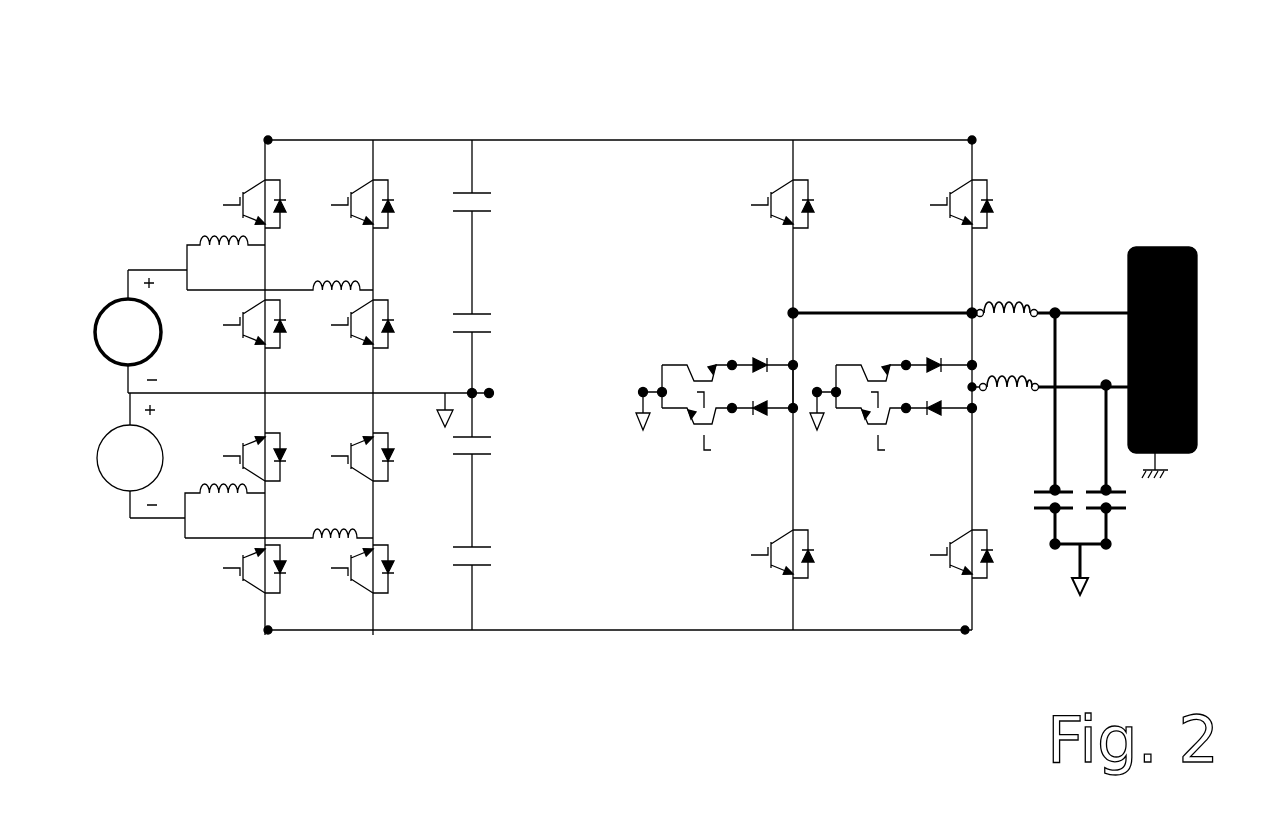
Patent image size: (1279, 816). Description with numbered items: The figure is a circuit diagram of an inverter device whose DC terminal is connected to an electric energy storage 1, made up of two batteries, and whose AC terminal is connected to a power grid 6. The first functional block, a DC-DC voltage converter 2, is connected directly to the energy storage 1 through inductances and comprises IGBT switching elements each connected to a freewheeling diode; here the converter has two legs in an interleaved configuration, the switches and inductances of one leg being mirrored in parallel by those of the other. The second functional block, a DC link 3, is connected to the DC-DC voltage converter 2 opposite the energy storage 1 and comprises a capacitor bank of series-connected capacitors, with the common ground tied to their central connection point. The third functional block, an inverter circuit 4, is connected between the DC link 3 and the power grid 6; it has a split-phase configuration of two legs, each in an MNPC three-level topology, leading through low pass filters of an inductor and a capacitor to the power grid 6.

The electric energy storage 1 is at (148, 115).
The DC-DC voltage converter 2 is at (338, 115).
The DC link 3 is at (472, 115).
The inverter circuit 4 is at (898, 115).
The power grid 6 is at (1175, 247).